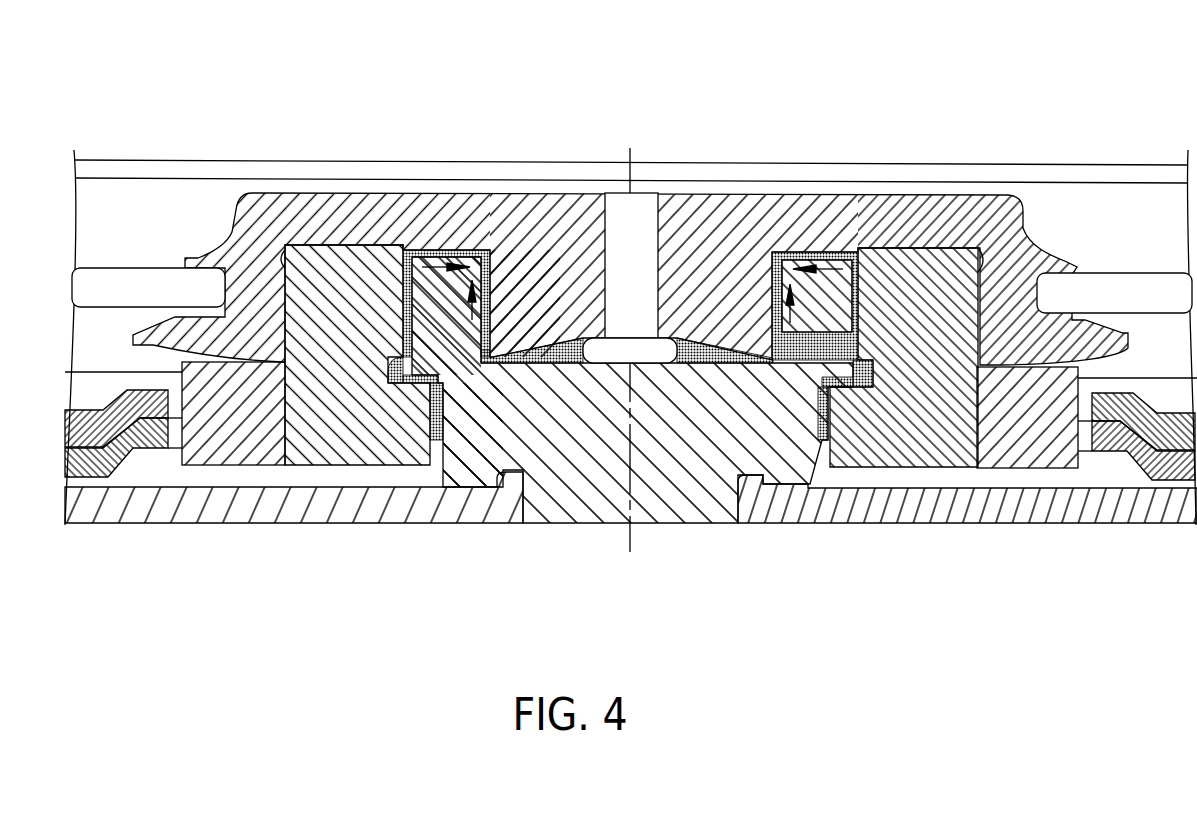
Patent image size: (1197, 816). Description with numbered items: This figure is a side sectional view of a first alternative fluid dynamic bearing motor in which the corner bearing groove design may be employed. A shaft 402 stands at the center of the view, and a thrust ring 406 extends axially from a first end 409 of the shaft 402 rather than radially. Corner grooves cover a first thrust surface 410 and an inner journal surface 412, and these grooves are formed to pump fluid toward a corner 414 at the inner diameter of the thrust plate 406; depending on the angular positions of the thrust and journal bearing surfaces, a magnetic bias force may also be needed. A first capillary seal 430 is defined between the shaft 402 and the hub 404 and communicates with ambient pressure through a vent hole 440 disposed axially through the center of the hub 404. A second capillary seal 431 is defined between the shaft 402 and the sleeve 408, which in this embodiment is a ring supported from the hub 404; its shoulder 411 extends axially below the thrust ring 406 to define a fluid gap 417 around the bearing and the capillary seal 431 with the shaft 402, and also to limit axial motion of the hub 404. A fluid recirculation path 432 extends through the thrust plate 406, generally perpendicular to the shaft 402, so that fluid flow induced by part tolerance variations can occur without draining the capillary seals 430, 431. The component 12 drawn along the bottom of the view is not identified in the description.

The substrate 12 is at (183, 523).
The shaft 402 is at (663, 502).
The hub 404 is at (552, 240).
The thrust ring 406 is at (820, 293).
The sleeve 408 is at (333, 425).
The first end 409 is at (470, 365).
The first thrust surface 410 is at (430, 250).
The shoulder 411 is at (436, 387).
The inner journal surface 412 is at (525, 255).
The corner 414 is at (472, 253).
The fluid gap 417 is at (863, 335).
The first capillary seal 430 is at (670, 340).
The second capillary seal 431 is at (820, 440).
The fluid recirculation path 432 is at (797, 362).
The vent hole 440 is at (643, 210).